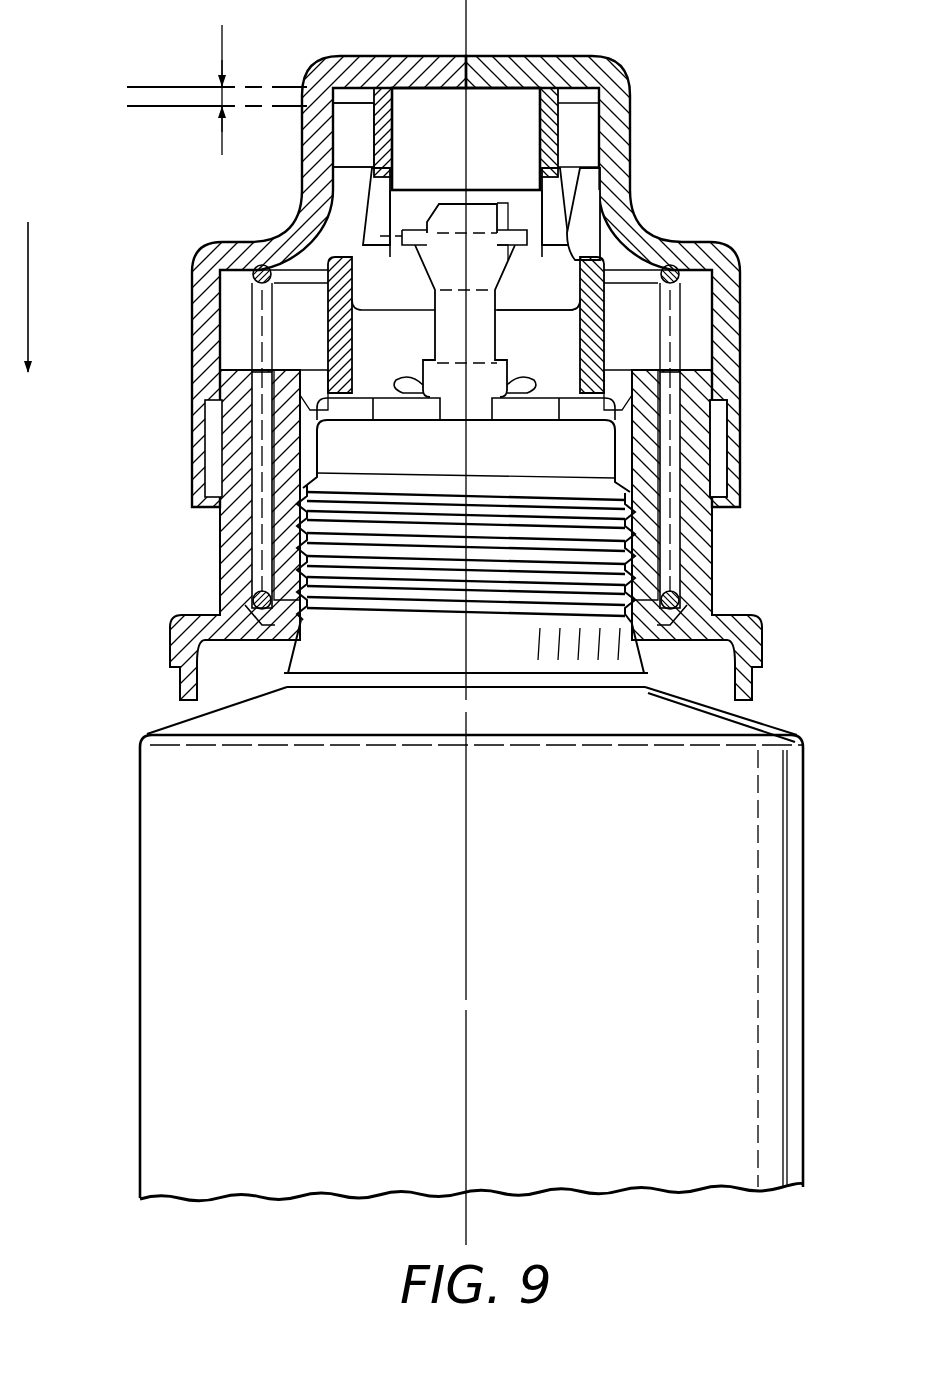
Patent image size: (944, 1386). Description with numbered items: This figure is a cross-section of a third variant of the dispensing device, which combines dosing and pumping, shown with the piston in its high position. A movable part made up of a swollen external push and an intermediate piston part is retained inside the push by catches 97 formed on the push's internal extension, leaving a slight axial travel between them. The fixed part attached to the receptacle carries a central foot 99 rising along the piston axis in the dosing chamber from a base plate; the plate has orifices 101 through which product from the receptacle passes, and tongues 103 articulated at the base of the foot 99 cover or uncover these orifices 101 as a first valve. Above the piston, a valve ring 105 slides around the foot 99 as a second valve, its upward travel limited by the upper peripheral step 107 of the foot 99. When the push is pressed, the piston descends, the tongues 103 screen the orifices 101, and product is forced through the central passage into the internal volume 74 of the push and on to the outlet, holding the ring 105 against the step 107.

The internal volume 74 is at (452, 147).
The catches 97 is at (520, 88).
The central foot 99 is at (395, 265).
The orifices 101 is at (533, 385).
The tongues 103 is at (403, 382).
The valve ring 105 is at (553, 223).
The upper peripheral step 107 is at (547, 217).